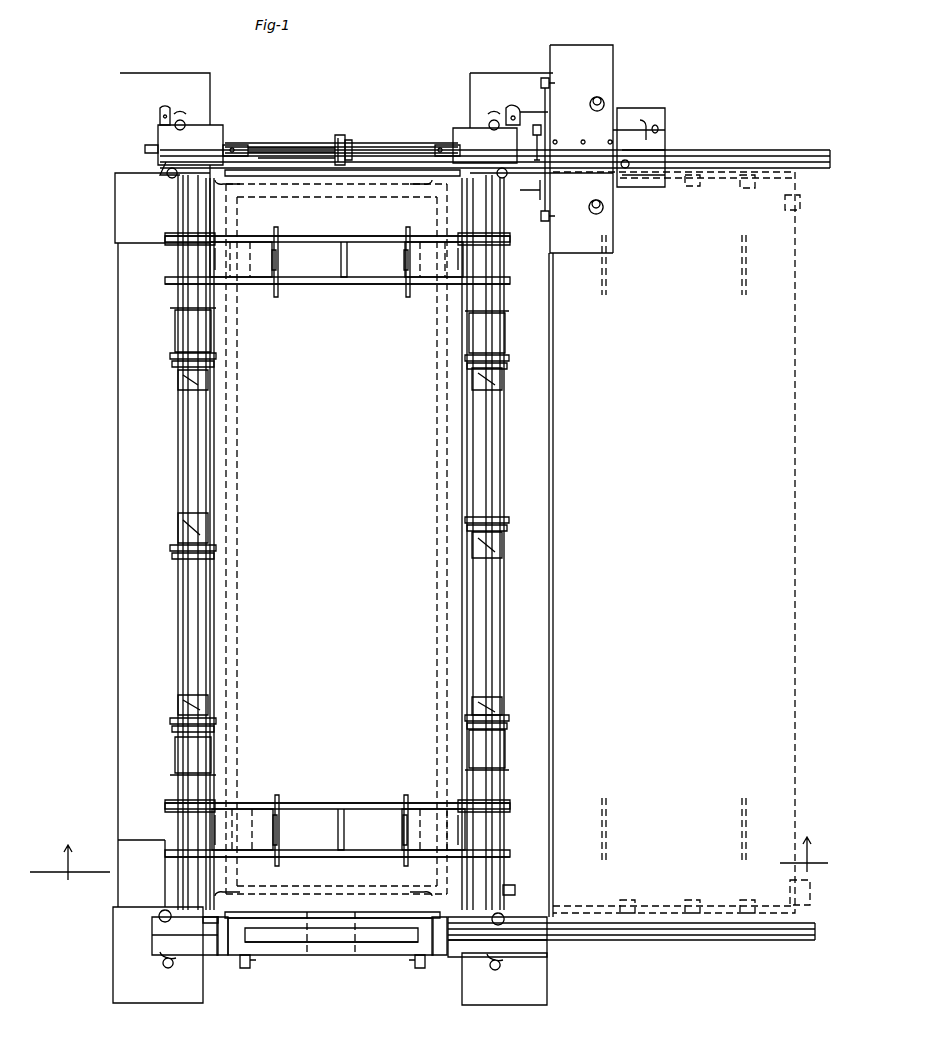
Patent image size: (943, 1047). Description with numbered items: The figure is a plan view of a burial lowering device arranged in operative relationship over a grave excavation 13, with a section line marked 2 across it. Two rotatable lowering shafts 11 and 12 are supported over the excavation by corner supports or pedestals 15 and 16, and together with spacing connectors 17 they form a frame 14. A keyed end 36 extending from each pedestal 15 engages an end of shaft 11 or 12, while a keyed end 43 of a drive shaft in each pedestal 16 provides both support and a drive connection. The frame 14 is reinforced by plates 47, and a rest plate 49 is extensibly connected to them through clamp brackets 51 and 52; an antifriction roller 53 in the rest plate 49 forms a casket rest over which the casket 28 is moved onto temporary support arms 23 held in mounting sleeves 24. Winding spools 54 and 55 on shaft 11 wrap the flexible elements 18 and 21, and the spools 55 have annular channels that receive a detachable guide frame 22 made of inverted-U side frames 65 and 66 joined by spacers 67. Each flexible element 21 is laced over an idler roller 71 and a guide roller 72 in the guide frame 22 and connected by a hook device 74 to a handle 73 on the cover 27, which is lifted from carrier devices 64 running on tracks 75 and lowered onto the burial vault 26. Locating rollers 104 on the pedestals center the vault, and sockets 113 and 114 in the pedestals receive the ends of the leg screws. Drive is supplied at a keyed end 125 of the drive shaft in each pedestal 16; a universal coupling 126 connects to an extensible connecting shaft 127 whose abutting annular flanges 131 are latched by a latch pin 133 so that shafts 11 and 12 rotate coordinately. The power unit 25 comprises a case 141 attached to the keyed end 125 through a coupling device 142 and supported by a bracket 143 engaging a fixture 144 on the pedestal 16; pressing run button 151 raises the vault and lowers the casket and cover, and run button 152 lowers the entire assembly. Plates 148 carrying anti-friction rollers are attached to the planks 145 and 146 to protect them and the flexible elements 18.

The rotatable lowering shaft 11 is at (178, 603).
The rotatable lowering shaft 12 is at (470, 648).
The grave excavation 13 is at (214, 632).
The frame 14 is at (299, 960).
The corner support or pedestal 15 is at (160, 944).
The corner support or pedestal 16 is at (213, 132).
The spacing connector 17 is at (330, 182).
The flexible element 18 is at (315, 194).
The flexible element 21 is at (255, 280).
The detachable guide frame 22 is at (345, 284).
The temporary support arm 23 is at (170, 358).
The mounting sleeve 24 is at (178, 373).
The power unit 25 is at (616, 58).
The burial vault 26 is at (437, 578).
The cover 27 is at (411, 525).
The casket 28 is at (437, 547).
The keyed end 36 is at (200, 922).
The keyed end 43 is at (182, 160).
The plate 47 is at (225, 955).
The rest plate 49 is at (360, 975).
The clamp bracket 51 is at (245, 968).
The clamp bracket 52 is at (418, 968).
The antifriction roller 53 is at (330, 942).
The winding spool 54 is at (175, 318).
The winding spool 55 is at (168, 292).
The carrier device 64 is at (798, 214).
The side frame 65 is at (308, 285).
The side frame 66 is at (302, 236).
The spacer 67 is at (344, 242).
The idler roller 71 is at (220, 245).
The guide roller 72 is at (278, 230).
The handle 73 is at (278, 290).
The hook device 74 is at (278, 271).
The track 75 is at (800, 150).
The locating roller 104 is at (228, 182).
The socket 113 is at (168, 175).
The socket 114 is at (195, 104).
The keyed end 125 is at (148, 145).
The universal coupling 126 is at (238, 145).
The extensible connecting shaft 127 is at (300, 146).
The annular flange 131 is at (342, 135).
The latch pin 133 is at (350, 140).
The case 141 is at (613, 78).
The coupling device 142 is at (545, 130).
The bracket 143 is at (544, 152).
The fixture 144 is at (160, 108).
The plank 145 is at (113, 975).
The plank 146 is at (547, 975).
The plate 148 is at (118, 222).
The run button 151 is at (605, 96).
The run button 152 is at (540, 83).
The section line 2- 2 is at (429, 858).